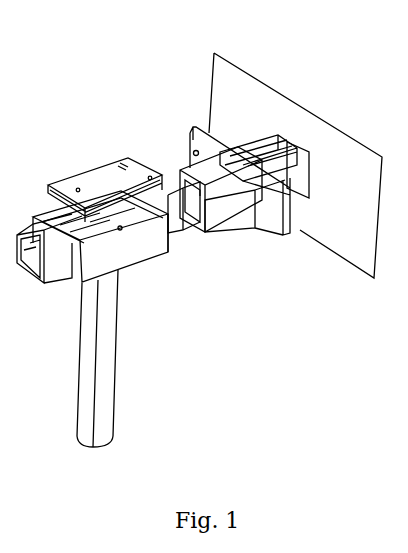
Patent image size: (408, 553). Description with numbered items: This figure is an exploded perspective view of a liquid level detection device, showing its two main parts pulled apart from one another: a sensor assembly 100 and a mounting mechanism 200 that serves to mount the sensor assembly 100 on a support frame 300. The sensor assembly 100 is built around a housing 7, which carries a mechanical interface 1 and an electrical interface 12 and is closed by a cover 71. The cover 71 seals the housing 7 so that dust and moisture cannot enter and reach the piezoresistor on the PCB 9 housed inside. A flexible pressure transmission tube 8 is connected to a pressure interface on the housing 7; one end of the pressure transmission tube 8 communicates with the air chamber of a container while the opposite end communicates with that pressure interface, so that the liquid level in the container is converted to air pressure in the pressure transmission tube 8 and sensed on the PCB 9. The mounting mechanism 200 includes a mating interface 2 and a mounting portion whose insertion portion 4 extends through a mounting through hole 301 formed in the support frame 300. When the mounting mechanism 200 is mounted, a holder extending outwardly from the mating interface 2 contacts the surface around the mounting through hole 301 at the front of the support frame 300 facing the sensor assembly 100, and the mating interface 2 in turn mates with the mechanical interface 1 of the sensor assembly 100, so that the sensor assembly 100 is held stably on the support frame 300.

The sensor assembly 100 is at (160, 327).
The mounting mechanism 200 is at (255, 250).
The support frame 300 is at (233, 82).
The mounting through hole 301 is at (297, 148).
The mechanical interface 1 is at (180, 223).
The mating interface 2 is at (183, 187).
The insertion portion 4 is at (267, 138).
The housing 7 is at (152, 250).
The cover 71 is at (100, 172).
The pressure transmission tube 8 is at (82, 370).
The PCB 9 is at (97, 230).
The electrical interface 12 is at (58, 272).